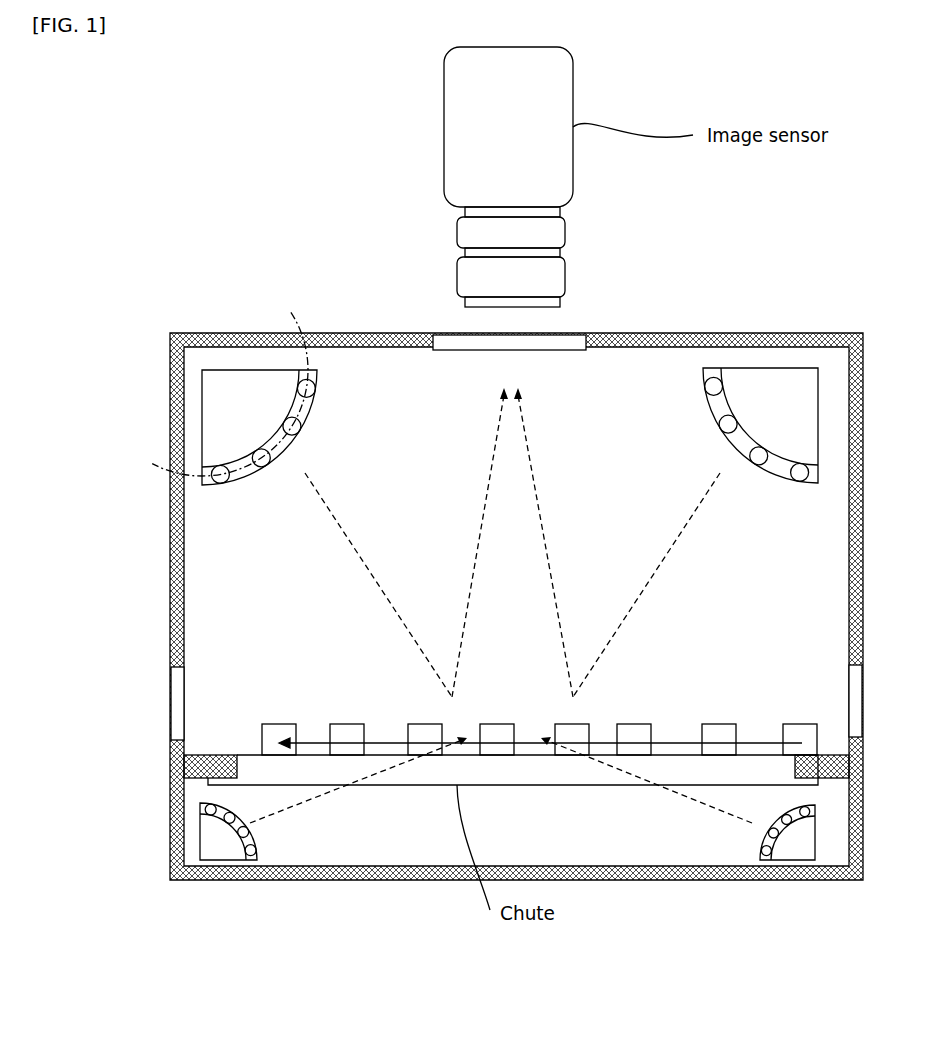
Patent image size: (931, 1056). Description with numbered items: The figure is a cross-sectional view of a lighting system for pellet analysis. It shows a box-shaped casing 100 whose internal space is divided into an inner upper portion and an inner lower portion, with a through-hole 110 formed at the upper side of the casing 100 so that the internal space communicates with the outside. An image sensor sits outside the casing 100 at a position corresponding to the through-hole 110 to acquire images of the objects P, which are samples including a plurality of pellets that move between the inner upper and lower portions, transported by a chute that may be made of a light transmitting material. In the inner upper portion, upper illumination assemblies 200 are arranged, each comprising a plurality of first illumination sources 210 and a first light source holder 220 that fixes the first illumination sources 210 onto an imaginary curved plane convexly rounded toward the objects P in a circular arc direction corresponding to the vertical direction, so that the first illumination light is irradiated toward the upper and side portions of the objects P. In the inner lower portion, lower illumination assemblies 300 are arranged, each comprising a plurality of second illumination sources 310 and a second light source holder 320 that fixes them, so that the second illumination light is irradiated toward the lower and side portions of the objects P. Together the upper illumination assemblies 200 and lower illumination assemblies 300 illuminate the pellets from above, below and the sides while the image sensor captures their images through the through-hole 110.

The casing 100 is at (757, 335).
The through-hole 110 is at (586, 348).
The upper illumination assembly 200 is at (431, 372).
The first illumination source 210 is at (217, 465).
The first light source holder 220 is at (228, 462).
The lower illumination assembly 300 is at (432, 849).
The second illumination source 310 is at (230, 835).
The second light source holder 320 is at (233, 818).
The objects to be sorted P is at (503, 743).